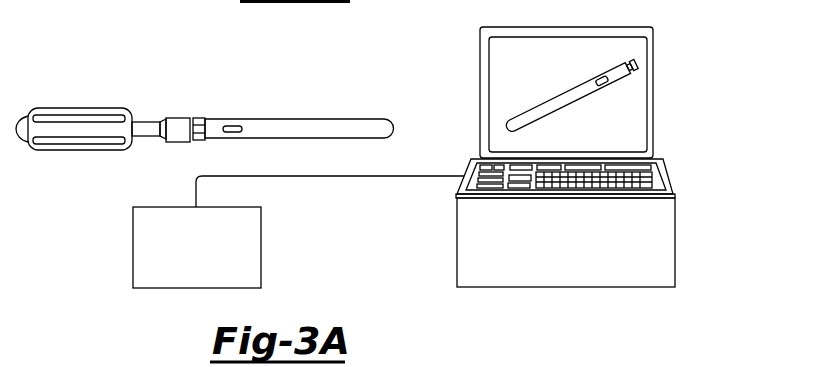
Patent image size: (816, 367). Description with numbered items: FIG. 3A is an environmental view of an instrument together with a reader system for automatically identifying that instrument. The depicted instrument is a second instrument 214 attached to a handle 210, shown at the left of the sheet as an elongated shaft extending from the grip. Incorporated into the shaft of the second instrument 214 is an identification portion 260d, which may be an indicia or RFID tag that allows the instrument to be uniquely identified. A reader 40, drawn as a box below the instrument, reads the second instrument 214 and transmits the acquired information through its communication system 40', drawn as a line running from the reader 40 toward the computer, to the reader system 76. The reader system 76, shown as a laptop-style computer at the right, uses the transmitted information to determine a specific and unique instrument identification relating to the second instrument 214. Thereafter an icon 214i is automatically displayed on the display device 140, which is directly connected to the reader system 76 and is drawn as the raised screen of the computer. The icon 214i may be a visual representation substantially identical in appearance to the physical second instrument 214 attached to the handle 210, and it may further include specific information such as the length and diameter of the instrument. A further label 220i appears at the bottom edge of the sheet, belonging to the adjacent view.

The handle 210 is at (68, 108).
The second instrument 214 is at (362, 120).
The identification portion 260d is at (235, 126).
The display device 140 is at (660, 111).
The icon 214i is at (528, 122).
The reader system 76 is at (682, 222).
The reader 40 is at (159, 247).
The communication system 40' is at (330, 222).
The image of instrument (next figure) 220i is at (536, 366).